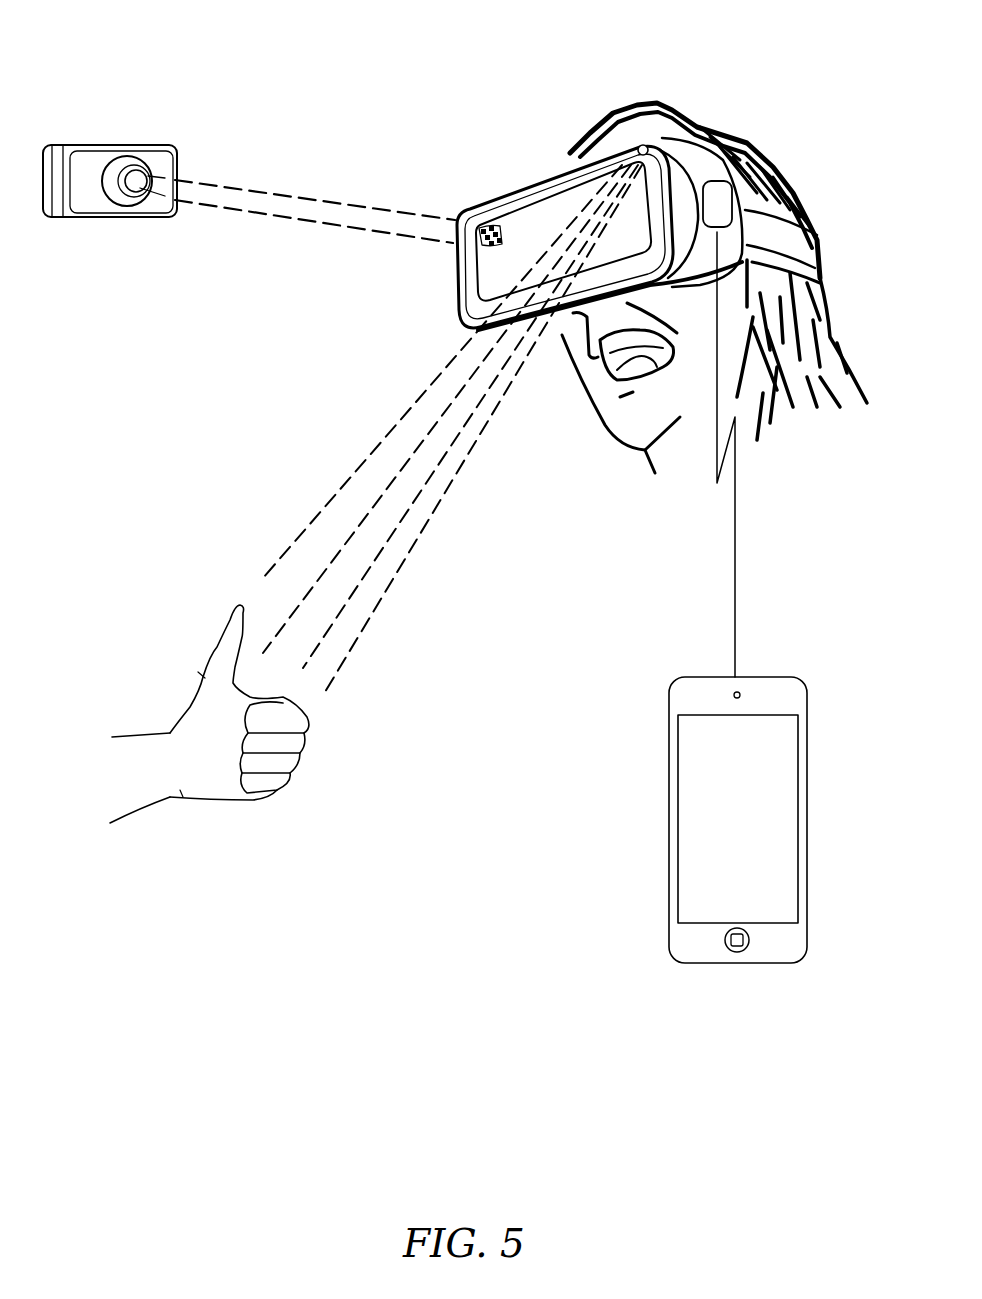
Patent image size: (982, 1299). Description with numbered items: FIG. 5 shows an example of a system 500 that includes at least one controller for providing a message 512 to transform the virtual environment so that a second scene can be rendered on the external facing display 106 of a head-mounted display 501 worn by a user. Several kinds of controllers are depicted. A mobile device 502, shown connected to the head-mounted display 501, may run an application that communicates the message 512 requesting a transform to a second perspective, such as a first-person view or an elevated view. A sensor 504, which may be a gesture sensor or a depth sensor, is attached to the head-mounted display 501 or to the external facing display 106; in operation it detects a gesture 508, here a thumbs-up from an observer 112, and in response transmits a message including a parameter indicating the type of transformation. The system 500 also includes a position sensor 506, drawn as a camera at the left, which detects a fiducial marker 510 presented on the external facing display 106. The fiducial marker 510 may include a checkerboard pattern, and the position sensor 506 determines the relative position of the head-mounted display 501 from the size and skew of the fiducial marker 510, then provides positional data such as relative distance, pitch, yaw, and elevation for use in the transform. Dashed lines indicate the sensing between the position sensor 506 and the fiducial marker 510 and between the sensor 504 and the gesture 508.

The system 500 is at (126, 52).
The position sensor 506 is at (90, 146).
The head-mounted display 501 is at (578, 122).
The sensor 504 is at (643, 144).
The external facing display 106 is at (550, 205).
The fiducial marker 510 is at (460, 208).
The message 512 is at (737, 545).
The mobile device 502 is at (808, 740).
The gesture 508 is at (207, 645).
The observer 112 is at (133, 736).